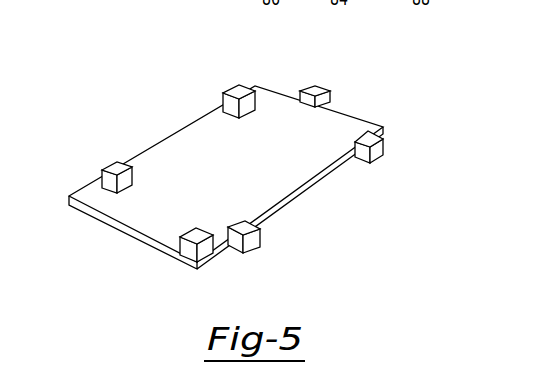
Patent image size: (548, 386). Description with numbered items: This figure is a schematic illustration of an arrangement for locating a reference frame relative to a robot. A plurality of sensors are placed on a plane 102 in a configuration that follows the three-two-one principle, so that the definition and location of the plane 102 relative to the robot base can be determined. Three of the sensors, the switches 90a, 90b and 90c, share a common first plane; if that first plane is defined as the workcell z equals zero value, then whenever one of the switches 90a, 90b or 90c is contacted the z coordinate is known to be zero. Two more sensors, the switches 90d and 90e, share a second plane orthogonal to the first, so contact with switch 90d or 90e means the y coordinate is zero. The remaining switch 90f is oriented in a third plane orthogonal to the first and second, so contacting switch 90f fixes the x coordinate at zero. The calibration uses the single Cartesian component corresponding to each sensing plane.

The plane 102 is at (292, 178).
The switch 90a is at (239, 18).
The switch 90b is at (102, 180).
The switch 90c is at (197, 157).
The switch 90d is at (447, 182).
The switch 90e is at (317, 275).
The switch 90f is at (392, 52).